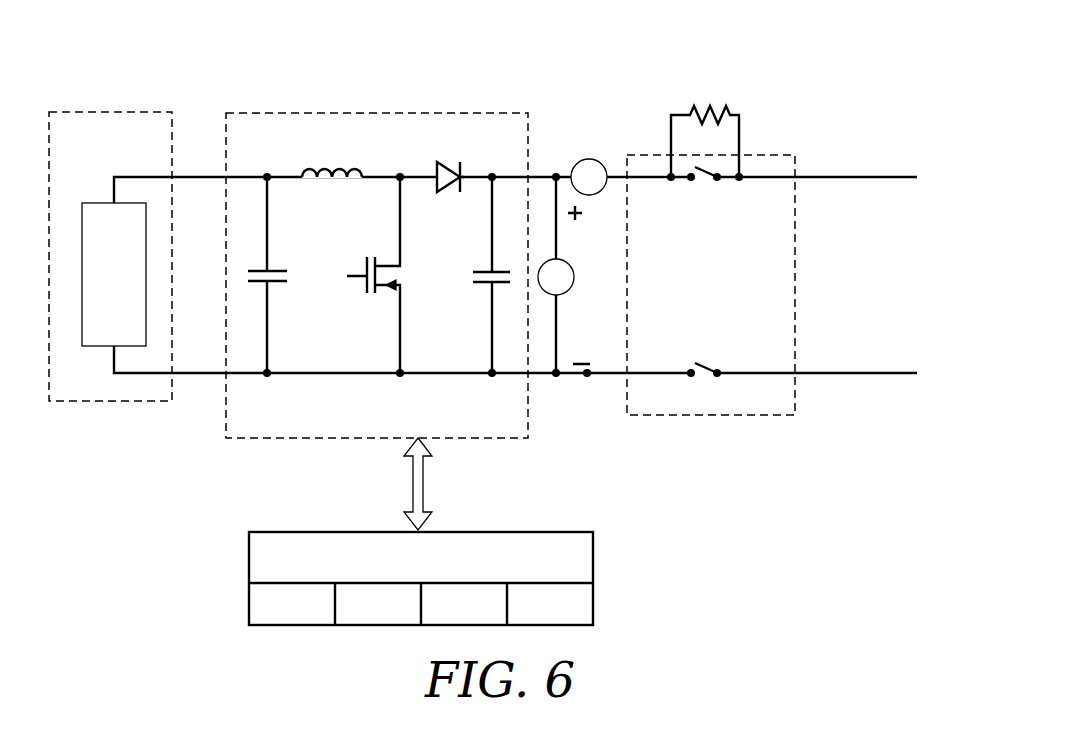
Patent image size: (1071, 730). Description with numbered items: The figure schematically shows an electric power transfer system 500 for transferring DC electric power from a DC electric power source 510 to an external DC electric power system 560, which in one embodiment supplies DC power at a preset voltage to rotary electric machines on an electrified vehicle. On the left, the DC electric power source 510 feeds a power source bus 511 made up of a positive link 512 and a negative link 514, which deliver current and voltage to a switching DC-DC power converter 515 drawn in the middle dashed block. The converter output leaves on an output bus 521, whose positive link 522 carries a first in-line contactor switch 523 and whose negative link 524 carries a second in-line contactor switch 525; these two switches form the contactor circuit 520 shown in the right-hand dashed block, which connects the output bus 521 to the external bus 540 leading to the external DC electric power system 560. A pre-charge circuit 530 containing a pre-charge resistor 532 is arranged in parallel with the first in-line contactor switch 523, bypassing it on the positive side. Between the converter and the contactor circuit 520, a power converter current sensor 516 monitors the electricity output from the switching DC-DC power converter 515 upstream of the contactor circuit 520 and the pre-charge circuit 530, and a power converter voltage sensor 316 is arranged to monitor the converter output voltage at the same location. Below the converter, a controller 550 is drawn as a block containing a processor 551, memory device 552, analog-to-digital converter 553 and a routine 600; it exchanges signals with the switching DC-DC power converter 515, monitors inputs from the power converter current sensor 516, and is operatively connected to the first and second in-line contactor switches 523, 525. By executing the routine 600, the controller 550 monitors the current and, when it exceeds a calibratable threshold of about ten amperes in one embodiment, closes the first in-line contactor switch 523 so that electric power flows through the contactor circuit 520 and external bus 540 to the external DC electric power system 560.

The electric power transfer system 500 is at (197, 100).
The DC electric power source 510 is at (114, 274).
The power source bus 511 is at (148, 176).
The positive link 512 is at (216, 180).
The negative link 514 is at (186, 376).
The switching DC-DC power converter 515 is at (377, 275).
The power converter current sensor 516 is at (573, 164).
The power converter voltage sensor 316 is at (544, 265).
The contactor circuit 520 is at (711, 285).
The output bus 521 is at (425, 176).
The positive link 522 is at (386, 176).
The first in-line contactor switch 523 is at (704, 173).
The negative link 524 is at (368, 376).
The second in-line contactor switch 525 is at (700, 365).
The pre-charge circuit 530 is at (756, 137).
The pre-charge resistor 532 is at (718, 112).
The external bus 540 is at (870, 177).
The controller 550 is at (421, 578).
The processor 551 is at (388, 604).
The memory device 552 is at (473, 604).
The analog-to-digital converter 553 is at (550, 604).
The external DC electric power system 560 is at (826, 317).
The routine 600 is at (301, 604).